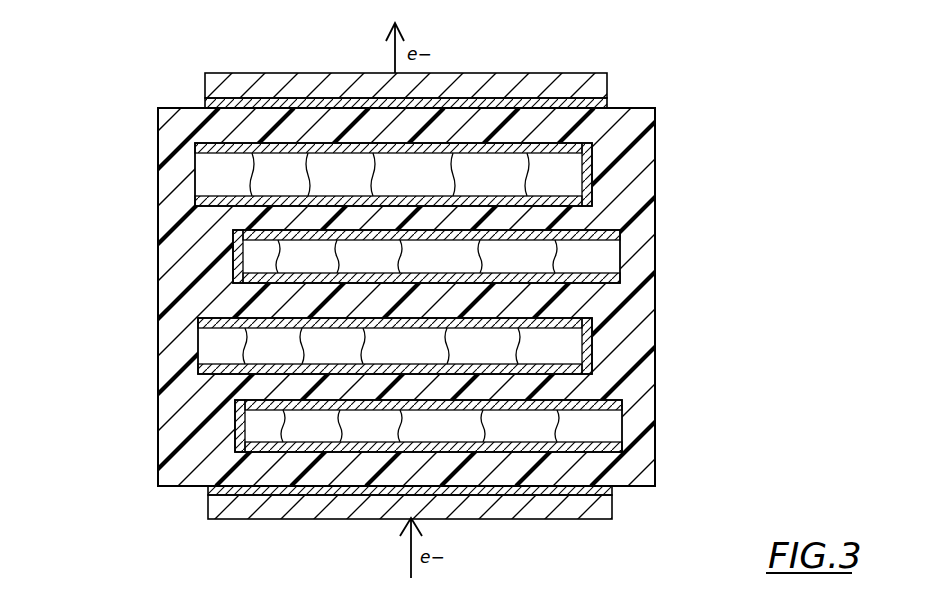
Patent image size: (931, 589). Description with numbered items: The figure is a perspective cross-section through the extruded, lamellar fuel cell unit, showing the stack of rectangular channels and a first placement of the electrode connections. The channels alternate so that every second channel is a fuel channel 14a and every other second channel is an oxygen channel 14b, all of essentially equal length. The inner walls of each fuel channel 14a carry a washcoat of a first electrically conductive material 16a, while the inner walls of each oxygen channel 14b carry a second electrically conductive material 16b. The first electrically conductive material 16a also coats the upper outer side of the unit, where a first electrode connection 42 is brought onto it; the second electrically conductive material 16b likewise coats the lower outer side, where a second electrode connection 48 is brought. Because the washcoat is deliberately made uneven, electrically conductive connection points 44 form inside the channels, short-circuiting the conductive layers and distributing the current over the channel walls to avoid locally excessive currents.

The first electrode connection 42 is at (592, 70).
The second electrode connection 48 is at (585, 520).
The fuel channel 14a is at (207, 350).
The oxygen channel 14b is at (592, 262).
The first electrically conductive material 16a is at (198, 371).
The second electrically conductive material 16b is at (608, 101).
The electrically conductive connection point 44 is at (253, 178).